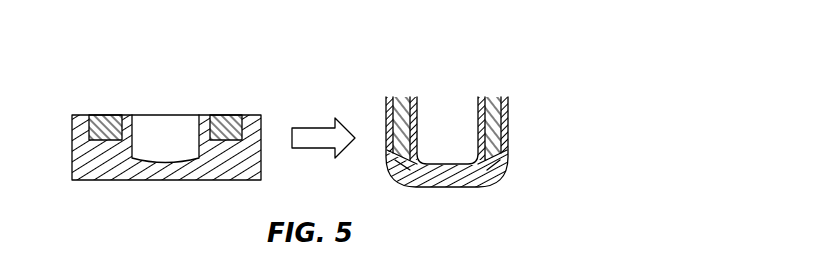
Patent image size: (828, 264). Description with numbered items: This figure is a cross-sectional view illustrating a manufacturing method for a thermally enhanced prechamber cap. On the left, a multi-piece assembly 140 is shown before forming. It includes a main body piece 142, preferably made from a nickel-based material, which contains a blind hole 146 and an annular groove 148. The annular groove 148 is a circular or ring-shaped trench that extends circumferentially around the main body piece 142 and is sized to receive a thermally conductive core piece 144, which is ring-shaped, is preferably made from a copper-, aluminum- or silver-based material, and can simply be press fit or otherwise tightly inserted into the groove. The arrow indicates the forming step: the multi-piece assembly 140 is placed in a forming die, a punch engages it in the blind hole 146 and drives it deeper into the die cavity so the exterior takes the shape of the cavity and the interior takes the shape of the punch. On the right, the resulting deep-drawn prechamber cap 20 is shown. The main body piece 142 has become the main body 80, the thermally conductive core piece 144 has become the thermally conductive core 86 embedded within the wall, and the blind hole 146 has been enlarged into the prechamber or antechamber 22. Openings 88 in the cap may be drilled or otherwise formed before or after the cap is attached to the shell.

The multi-piece assembly 140 is at (156, 128).
The main body piece 142 is at (223, 170).
The thermally conductive core piece 144 is at (222, 130).
The blind hole 146 is at (180, 120).
The annular groove 148 is at (105, 137).
The prechamber cap 20 is at (478, 142).
The prechamber 22 is at (457, 144).
The main body 80 is at (440, 177).
The thermally conductive core 86 is at (399, 107).
The openings 88 is at (408, 177).